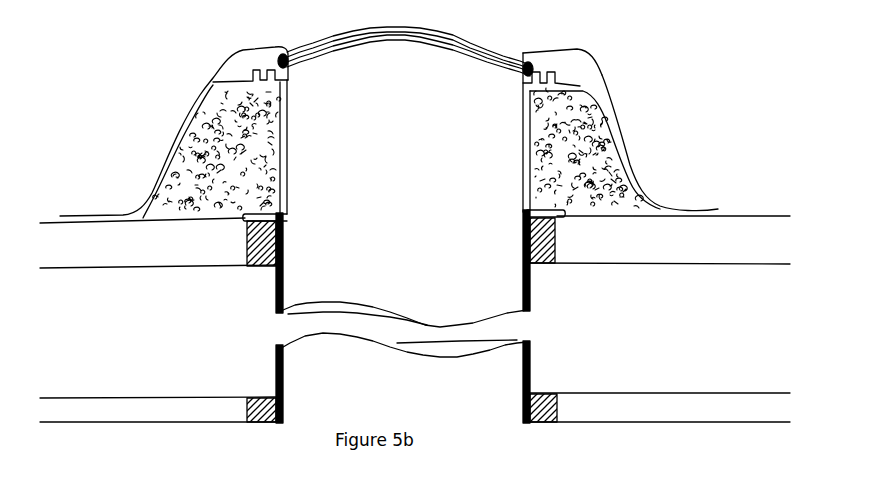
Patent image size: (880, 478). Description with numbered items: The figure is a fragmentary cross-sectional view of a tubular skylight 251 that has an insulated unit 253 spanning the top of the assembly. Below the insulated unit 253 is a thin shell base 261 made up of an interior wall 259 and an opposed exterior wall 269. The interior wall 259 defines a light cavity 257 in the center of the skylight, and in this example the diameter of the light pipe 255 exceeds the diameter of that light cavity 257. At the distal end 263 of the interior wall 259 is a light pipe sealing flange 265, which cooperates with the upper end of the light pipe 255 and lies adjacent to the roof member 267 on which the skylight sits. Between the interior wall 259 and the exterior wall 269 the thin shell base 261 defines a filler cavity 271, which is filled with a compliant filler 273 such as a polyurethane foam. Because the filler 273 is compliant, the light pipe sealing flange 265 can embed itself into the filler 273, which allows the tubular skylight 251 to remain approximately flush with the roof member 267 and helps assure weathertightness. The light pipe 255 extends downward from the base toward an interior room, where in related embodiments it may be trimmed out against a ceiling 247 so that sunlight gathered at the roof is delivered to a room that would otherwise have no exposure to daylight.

The ceiling 247 is at (416, 112).
The tubular skylight 251 is at (318, 43).
The insulated unit 253 is at (452, 31).
The light pipe 255 is at (538, 288).
The light cavity 257 is at (514, 184).
The interior wall 259 is at (514, 152).
The thin shell base 261 is at (514, 133).
The distal end 263 is at (558, 210).
The light pipe sealing flange 265 is at (535, 208).
The roof member 267 is at (596, 253).
The exterior wall 269 is at (613, 137).
The filler cavity 271 is at (578, 166).
The compliant filler 273 is at (577, 117).